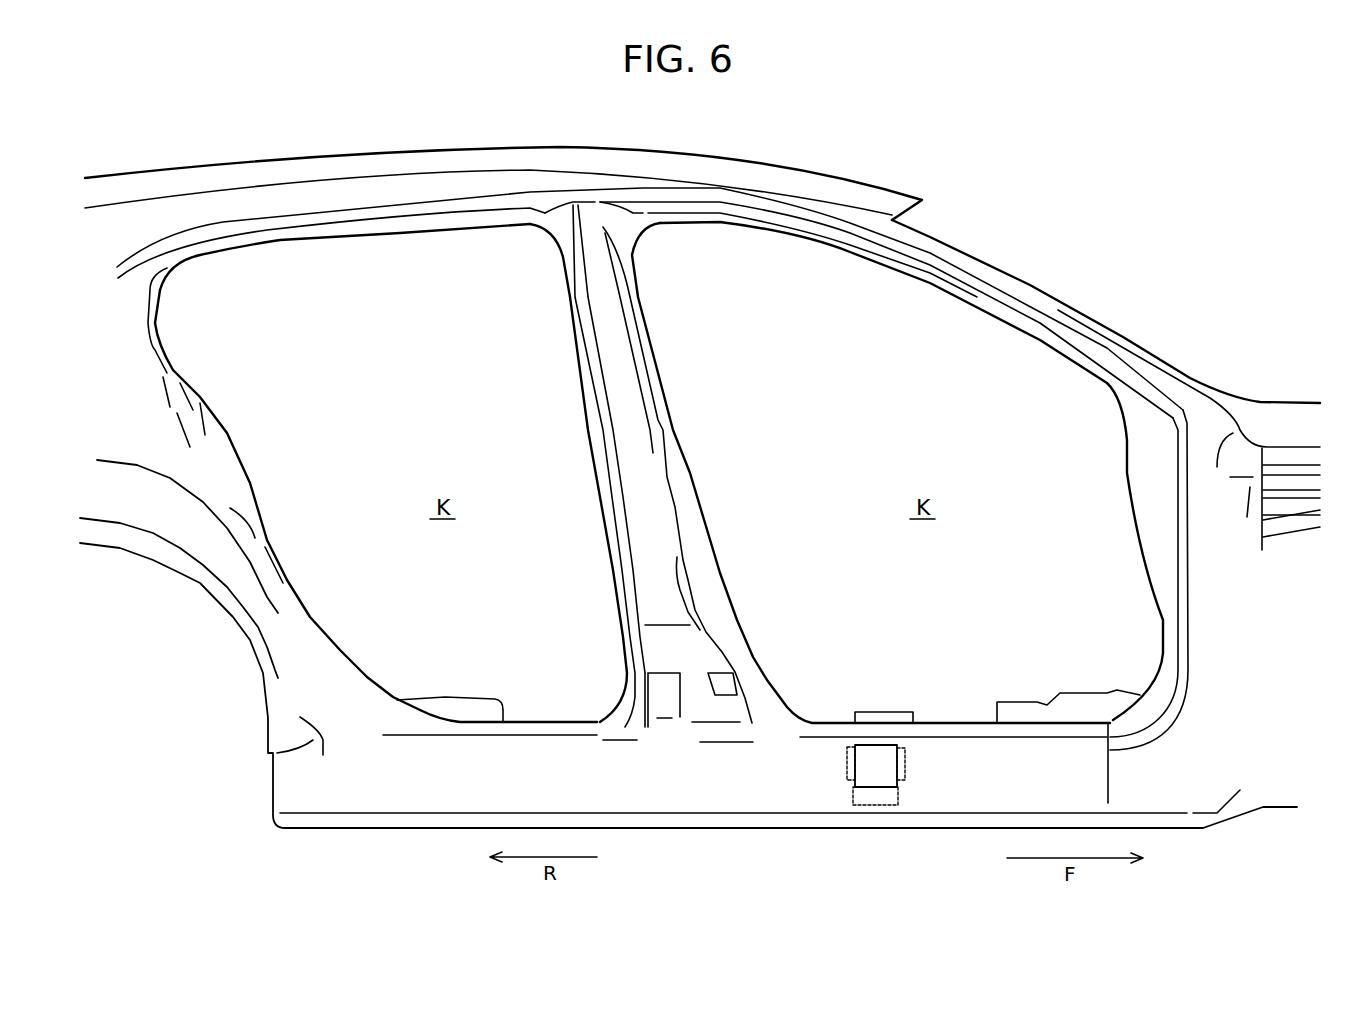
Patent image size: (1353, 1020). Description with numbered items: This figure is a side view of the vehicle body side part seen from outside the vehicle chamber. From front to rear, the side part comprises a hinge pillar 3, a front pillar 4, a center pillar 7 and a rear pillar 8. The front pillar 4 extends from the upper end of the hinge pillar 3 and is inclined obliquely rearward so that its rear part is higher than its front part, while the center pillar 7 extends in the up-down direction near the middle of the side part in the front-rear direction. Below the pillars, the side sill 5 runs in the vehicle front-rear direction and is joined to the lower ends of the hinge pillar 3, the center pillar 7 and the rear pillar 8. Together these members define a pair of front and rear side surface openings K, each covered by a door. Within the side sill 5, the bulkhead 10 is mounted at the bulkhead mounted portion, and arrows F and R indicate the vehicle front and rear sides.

The hinge pillar 3 is at (1180, 505).
The front pillar 4 is at (1013, 308).
The side sill 5 is at (733, 788).
The center pillar 7 is at (648, 473).
The rear pillar 8 is at (225, 458).
The bulkhead 10 is at (900, 790).